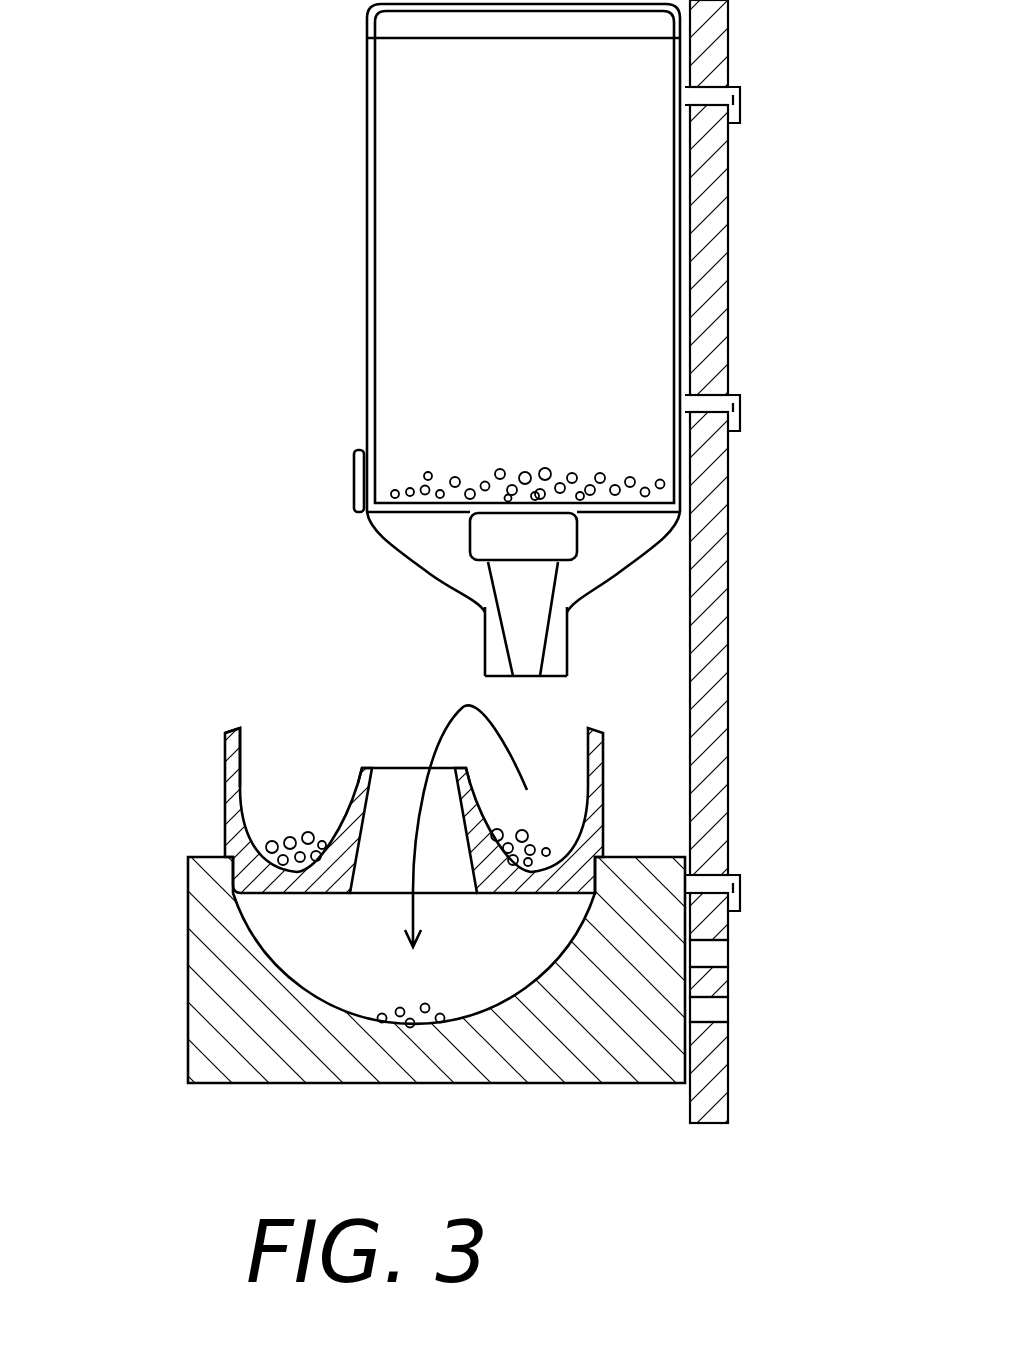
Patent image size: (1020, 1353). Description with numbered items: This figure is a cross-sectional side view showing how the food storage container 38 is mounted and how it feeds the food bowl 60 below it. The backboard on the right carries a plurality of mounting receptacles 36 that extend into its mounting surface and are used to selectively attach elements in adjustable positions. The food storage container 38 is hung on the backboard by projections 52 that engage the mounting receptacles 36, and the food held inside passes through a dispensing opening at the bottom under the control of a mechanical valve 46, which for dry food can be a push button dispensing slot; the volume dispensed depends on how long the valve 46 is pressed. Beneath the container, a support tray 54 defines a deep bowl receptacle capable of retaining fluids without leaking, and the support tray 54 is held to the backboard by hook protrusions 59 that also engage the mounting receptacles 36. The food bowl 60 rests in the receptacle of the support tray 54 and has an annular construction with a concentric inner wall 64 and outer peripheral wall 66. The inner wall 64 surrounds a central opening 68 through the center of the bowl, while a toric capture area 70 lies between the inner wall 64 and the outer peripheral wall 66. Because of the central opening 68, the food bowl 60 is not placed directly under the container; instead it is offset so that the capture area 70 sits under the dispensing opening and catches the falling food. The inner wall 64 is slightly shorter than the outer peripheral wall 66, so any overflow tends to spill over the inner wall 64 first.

The mounting receptacle 36 is at (718, 80).
The food storage container 38 is at (432, 281).
The mechanical valve 46 is at (352, 468).
The projection 52 is at (728, 402).
The support tray 54 is at (187, 1013).
The hook protrusion 59 is at (740, 877).
The food bowl 60 is at (222, 810).
The inner wall 64 is at (356, 783).
The outer peripheral wall 66 is at (230, 752).
The central opening 68 is at (399, 780).
The toric capture area 70 is at (302, 810).